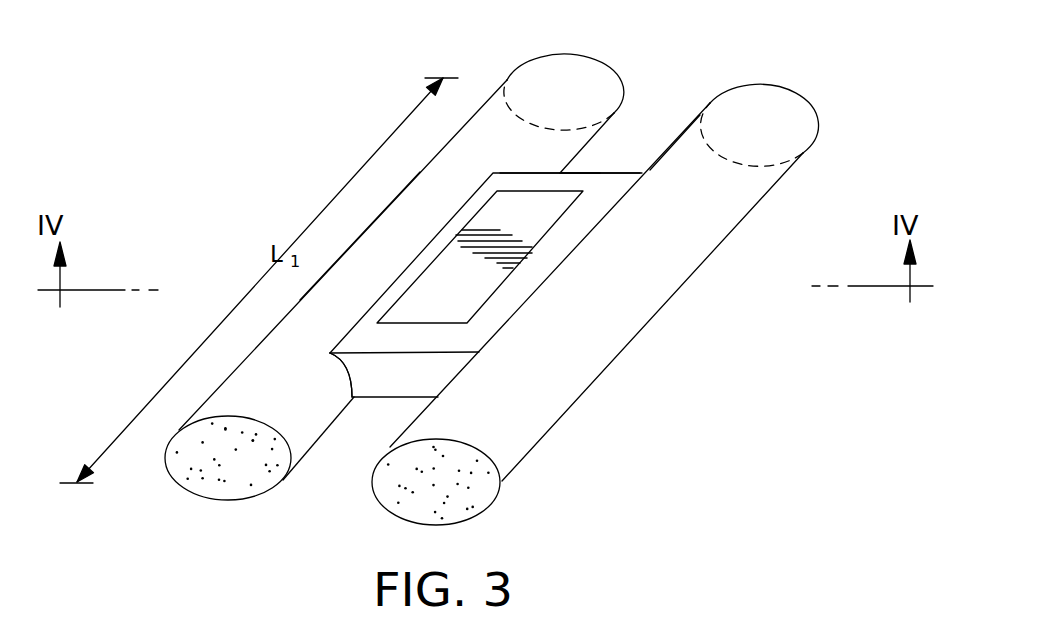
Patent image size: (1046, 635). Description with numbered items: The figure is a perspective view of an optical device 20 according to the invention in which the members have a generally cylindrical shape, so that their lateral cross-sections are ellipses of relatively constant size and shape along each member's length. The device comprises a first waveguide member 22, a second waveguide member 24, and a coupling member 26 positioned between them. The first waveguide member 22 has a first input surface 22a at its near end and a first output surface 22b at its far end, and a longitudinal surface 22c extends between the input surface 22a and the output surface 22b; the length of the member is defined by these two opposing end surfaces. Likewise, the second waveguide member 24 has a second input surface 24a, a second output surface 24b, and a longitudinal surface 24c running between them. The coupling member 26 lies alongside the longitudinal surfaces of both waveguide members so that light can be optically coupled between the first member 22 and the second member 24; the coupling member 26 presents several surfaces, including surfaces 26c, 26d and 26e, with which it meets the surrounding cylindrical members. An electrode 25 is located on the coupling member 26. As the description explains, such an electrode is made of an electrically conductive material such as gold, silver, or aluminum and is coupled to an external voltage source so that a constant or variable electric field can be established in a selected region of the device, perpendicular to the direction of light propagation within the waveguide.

The optical device 20 is at (268, 313).
The first waveguide member 22 is at (438, 145).
The first input surface 22a is at (190, 477).
The first output surface 22b is at (566, 77).
The longitudinal surface 22c is at (413, 193).
The second waveguide member 24 is at (647, 332).
The second input surface 24a is at (470, 495).
The second output surface 24b is at (782, 108).
The longitudinal surface 24c is at (708, 235).
The electrode 25 is at (467, 308).
The coupling member 26 is at (380, 312).
The surface of coupling member 26c is at (620, 180).
The surface of coupling member 26d is at (385, 387).
The surface of coupling member 26e is at (588, 175).